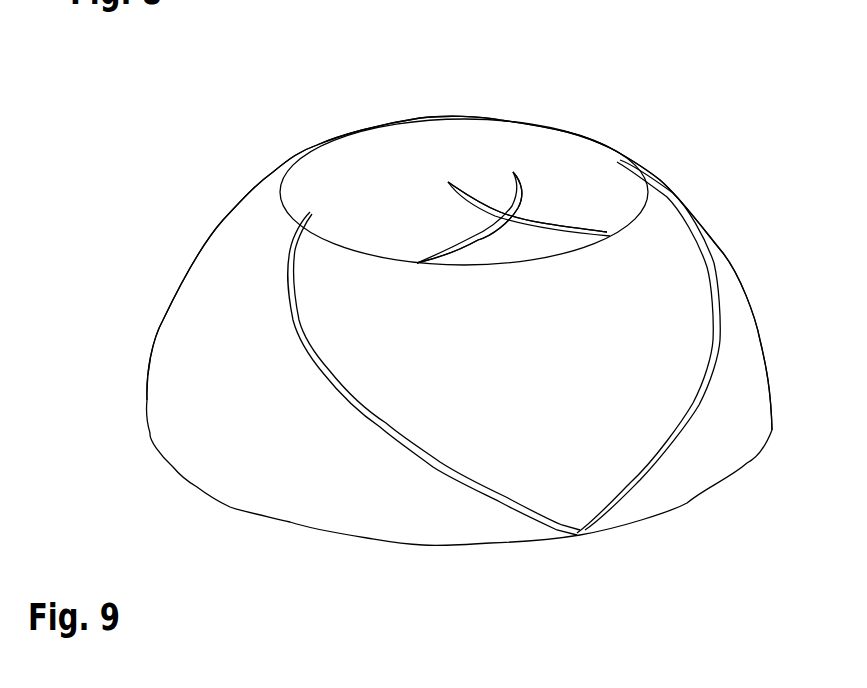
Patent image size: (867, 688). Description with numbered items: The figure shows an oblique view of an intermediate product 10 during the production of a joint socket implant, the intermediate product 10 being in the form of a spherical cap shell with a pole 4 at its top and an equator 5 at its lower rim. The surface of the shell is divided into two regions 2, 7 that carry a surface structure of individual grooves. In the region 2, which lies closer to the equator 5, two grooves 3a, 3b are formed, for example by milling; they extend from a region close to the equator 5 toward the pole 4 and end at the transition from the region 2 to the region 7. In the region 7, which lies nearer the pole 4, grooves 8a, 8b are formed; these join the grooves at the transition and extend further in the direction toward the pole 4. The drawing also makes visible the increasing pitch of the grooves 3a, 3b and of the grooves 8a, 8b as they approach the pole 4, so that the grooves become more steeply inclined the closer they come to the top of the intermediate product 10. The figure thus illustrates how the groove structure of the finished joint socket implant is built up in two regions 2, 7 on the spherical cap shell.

The region 2 is at (148, 323).
The groove 3a is at (430, 458).
The groove 3b is at (650, 473).
The pole 4 is at (463, 163).
The equator 5 is at (190, 487).
The region 7 is at (550, 150).
The groove 8a is at (462, 247).
The groove 8b is at (540, 222).
The intermediate product 10 is at (183, 228).